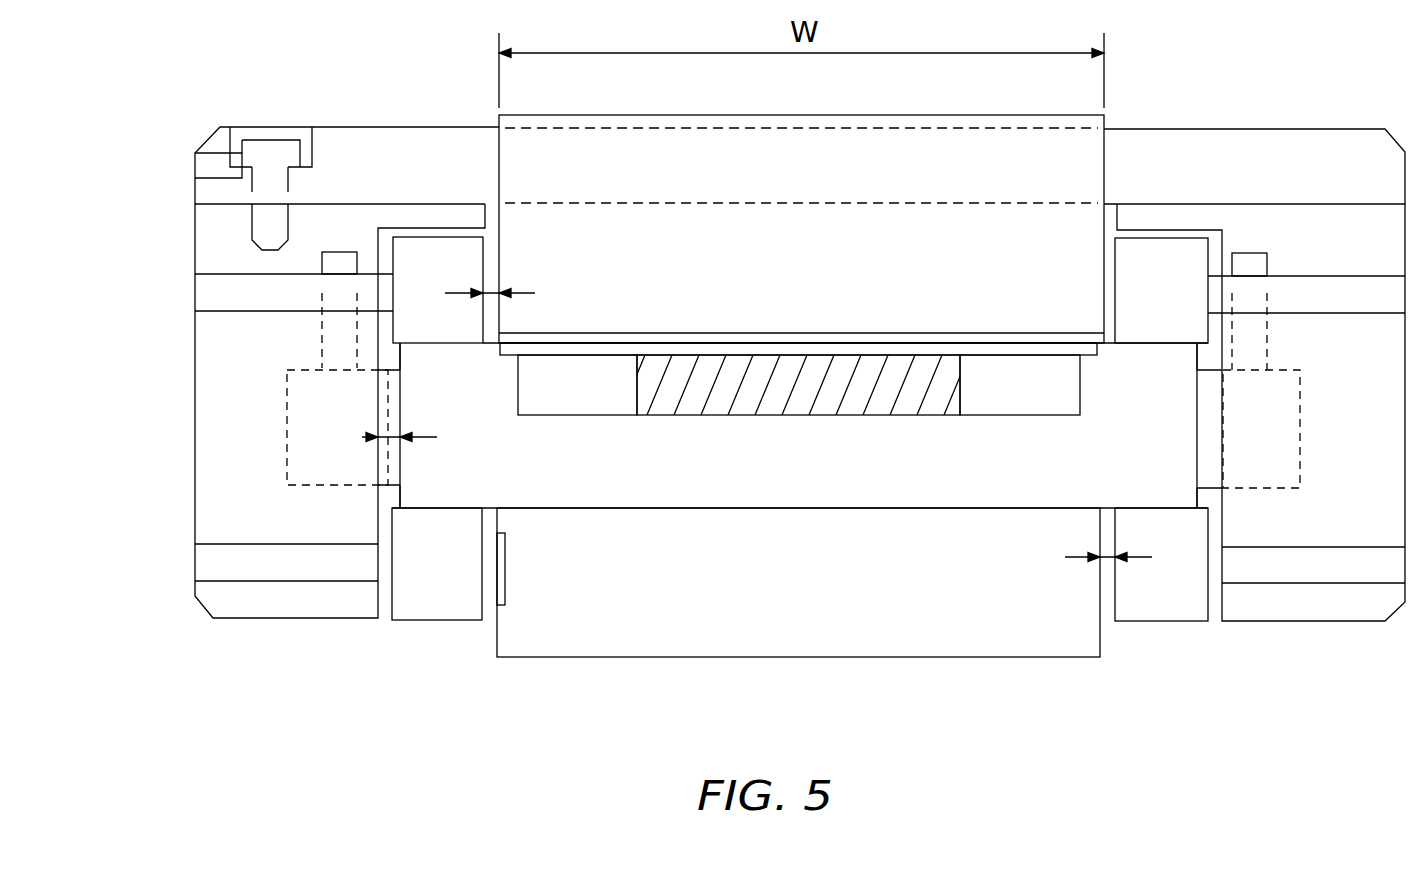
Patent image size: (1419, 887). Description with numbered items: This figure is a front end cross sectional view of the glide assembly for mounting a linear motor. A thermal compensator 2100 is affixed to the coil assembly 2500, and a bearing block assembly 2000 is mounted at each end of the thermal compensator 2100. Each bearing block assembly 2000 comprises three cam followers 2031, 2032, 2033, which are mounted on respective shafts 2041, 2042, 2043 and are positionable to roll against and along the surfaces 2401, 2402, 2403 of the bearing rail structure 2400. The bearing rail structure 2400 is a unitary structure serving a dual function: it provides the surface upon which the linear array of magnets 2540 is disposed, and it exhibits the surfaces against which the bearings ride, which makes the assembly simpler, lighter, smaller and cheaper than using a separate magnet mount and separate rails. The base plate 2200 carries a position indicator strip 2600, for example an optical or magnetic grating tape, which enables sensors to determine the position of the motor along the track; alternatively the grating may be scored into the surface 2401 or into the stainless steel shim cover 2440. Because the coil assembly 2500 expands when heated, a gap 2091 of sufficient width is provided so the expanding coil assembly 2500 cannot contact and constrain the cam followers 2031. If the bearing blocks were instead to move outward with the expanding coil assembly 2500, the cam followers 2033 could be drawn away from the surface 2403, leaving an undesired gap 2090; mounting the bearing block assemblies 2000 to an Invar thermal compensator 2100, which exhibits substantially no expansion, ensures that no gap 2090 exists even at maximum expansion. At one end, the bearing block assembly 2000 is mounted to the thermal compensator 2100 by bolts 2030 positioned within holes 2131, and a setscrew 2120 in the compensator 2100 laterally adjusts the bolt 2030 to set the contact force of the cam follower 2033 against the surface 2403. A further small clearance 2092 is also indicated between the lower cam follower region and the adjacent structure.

The bearing block assembly 2000 is at (260, 620).
The thermal compensator 2100 is at (1203, 130).
The setscrew 2120 is at (207, 160).
The hole 2131 is at (278, 127).
The bolt 2030 is at (272, 160).
The cam follower 2031 is at (460, 265).
The cam follower 2032 is at (427, 607).
The cam follower 2033 is at (340, 478).
The shaft 2041 is at (205, 292).
The shaft 2042 is at (343, 570).
The shaft 2043 is at (335, 355).
The gap 2090 is at (371, 435).
The gap 2091 is at (519, 291).
The gap 2092 is at (1081, 555).
The base plate 2200 is at (705, 657).
The bearing rail structure 2400 is at (750, 495).
The surface 2401 is at (452, 350).
The surface 2402 is at (447, 505).
The surface 2403 is at (398, 402).
The stainless steel shim cover 2440 is at (552, 350).
The coil assembly 2500 is at (755, 115).
The linear array of magnets 2540 is at (762, 403).
The position indicator strip 2600 is at (507, 558).